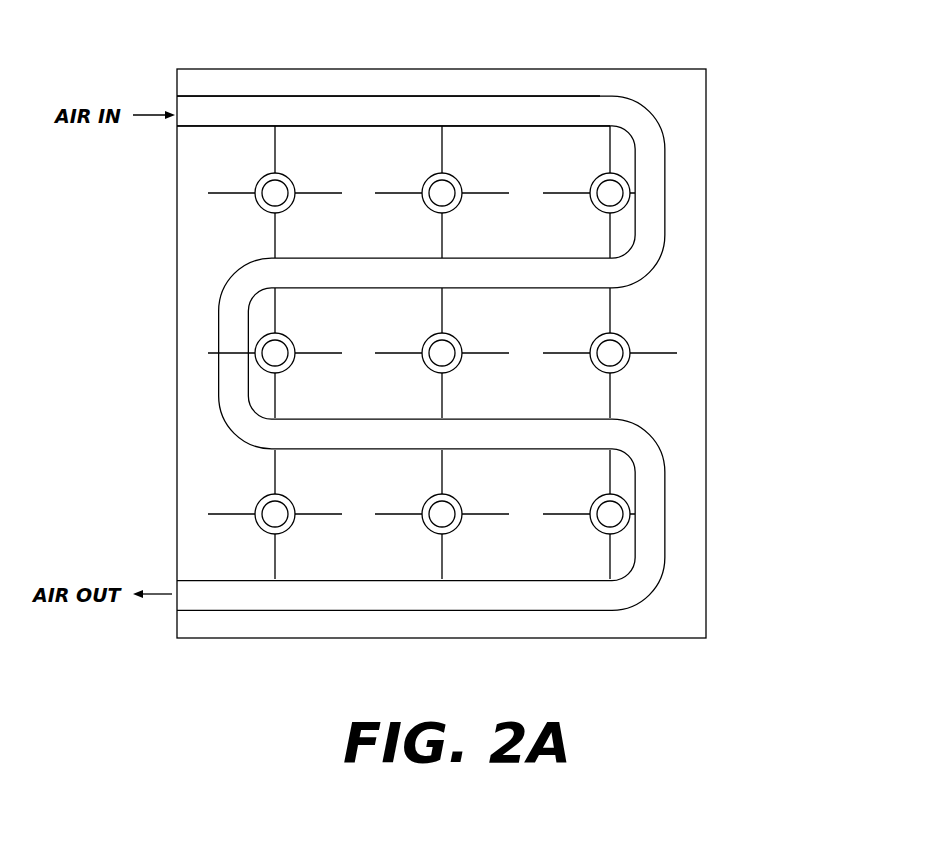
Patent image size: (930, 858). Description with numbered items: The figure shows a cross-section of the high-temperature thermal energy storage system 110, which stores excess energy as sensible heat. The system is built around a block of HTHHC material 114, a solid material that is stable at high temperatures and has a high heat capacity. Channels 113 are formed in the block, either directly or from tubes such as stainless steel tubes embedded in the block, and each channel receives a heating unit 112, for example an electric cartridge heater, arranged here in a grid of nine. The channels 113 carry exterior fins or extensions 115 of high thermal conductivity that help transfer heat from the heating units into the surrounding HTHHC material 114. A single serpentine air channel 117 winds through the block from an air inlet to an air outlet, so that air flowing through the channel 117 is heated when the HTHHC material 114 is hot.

The high-temperature thermal energy storage system 110 is at (768, 76).
The heating units 112 is at (438, 187).
The channels 113 is at (435, 175).
The HTHHC material 114 is at (662, 87).
The exterior fins or extensions 115 is at (671, 192).
The air channel 117 is at (208, 117).